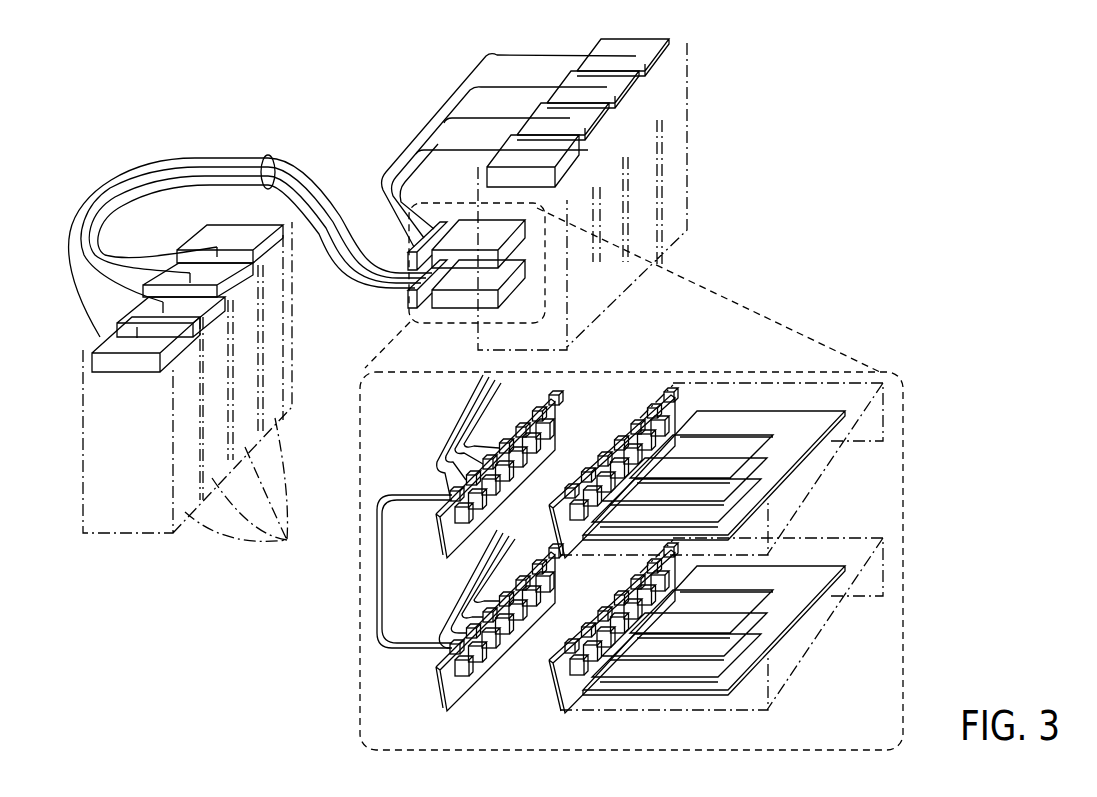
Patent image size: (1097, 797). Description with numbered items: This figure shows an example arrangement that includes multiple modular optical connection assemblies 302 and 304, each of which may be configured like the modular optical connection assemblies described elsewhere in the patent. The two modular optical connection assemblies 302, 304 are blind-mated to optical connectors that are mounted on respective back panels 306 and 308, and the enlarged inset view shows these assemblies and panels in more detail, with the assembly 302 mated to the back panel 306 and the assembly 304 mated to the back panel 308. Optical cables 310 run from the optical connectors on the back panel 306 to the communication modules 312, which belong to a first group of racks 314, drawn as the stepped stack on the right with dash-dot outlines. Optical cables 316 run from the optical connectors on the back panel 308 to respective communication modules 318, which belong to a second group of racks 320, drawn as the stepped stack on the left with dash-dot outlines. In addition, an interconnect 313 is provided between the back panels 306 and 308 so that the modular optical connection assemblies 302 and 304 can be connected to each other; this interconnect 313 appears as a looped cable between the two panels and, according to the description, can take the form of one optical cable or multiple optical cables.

The modular optical connection assembly 302 is at (525, 236).
The modular optical connection assembly 304 is at (525, 280).
The back panel 306 is at (441, 225).
The back panel 308 is at (409, 313).
The optical cables 310 is at (417, 163).
The communication modules 312 is at (588, 148).
The interconnect 313 is at (376, 284).
The first group of racks 314 is at (640, 270).
The optical cables 316 is at (268, 157).
The communication modules 318 is at (217, 247).
The second group of racks 320 is at (194, 401).